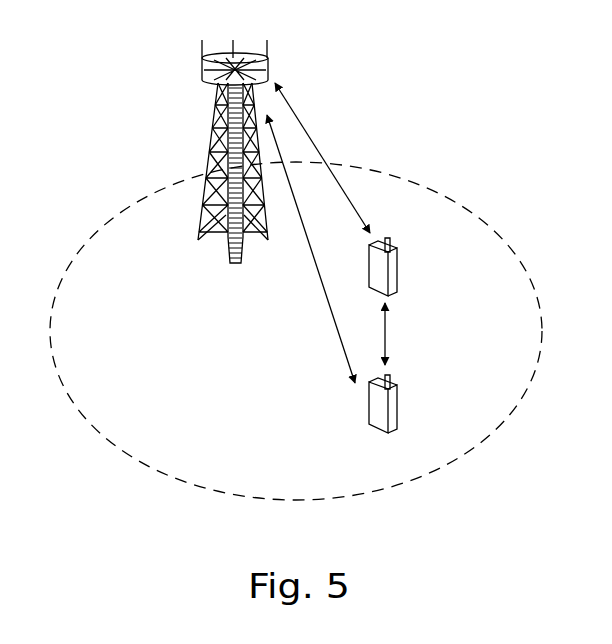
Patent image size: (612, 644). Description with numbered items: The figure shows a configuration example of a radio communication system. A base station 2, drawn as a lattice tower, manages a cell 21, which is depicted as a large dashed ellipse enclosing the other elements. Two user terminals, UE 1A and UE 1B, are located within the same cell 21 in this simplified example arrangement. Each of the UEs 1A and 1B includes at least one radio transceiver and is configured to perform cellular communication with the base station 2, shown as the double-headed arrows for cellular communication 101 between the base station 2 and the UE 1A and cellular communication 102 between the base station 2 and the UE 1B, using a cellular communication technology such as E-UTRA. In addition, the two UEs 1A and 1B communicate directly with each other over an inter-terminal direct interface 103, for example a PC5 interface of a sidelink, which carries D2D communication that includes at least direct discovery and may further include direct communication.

The base station 2 is at (218, 115).
The cell 21 is at (438, 190).
The cellular communication 101 is at (303, 125).
The cellular communication 102 is at (310, 252).
The inter-terminal direct interface 103 is at (385, 337).
The UE 1A is at (393, 268).
The UE 1B is at (367, 413).